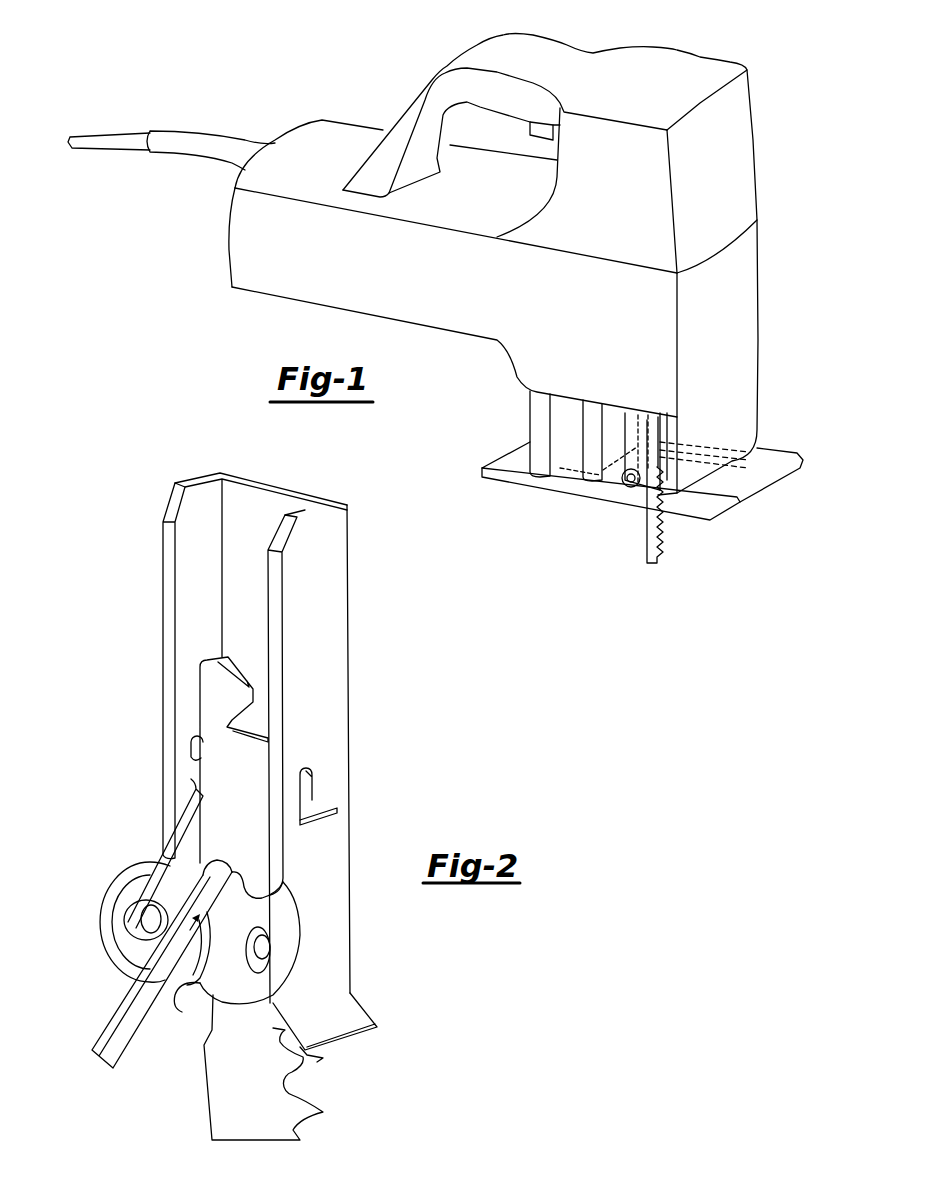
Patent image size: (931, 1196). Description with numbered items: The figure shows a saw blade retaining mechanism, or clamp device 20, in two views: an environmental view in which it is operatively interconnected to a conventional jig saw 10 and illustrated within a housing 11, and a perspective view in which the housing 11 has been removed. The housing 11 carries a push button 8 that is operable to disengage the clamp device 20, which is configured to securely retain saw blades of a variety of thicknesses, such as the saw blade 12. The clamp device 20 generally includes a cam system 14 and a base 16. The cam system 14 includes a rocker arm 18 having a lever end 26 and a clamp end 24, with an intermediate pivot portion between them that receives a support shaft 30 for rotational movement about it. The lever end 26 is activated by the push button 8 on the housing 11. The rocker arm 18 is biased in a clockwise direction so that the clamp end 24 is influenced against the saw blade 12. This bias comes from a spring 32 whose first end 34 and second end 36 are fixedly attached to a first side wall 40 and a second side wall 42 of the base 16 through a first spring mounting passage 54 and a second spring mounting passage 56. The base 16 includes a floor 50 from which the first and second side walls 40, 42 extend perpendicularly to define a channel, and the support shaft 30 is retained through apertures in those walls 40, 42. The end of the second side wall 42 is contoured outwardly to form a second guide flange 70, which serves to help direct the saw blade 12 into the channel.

In FIG. 1, the jig saw 10 is at (767, 148).
In FIG. 1, the housing 11 is at (748, 398).
In FIG. 2, the saw blade 12 is at (207, 1098).
In FIG. 2, the cam system 14 is at (117, 880).
In FIG. 2, the base 16 is at (151, 567).
In FIG. 2, the rocker arm 18 is at (155, 900).
In FIG. 1, the clamp device 20 is at (606, 449).
In FIG. 2, the clamp device 20 is at (357, 647).
In FIG. 2, the clamp end 24 is at (240, 843).
In FIG. 2, the lever end 26 is at (97, 1058).
In FIG. 2, the support shaft 30 is at (265, 953).
In FIG. 2, the spring 32 is at (150, 923).
In FIG. 2, the first end 34 is at (192, 776).
In FIG. 2, the second end 36 is at (337, 810).
In FIG. 2, the first side wall 40 is at (170, 627).
In FIG. 2, the second side wall 42 is at (277, 593).
In FIG. 2, the floor 50 is at (260, 545).
In FIG. 2, the first spring mounting passage 54 is at (192, 742).
In FIG. 2, the second spring mounting passage 56 is at (307, 775).
In FIG. 2, the second guide flange 70 is at (343, 1017).
In FIG. 1, the push button 8 is at (630, 484).